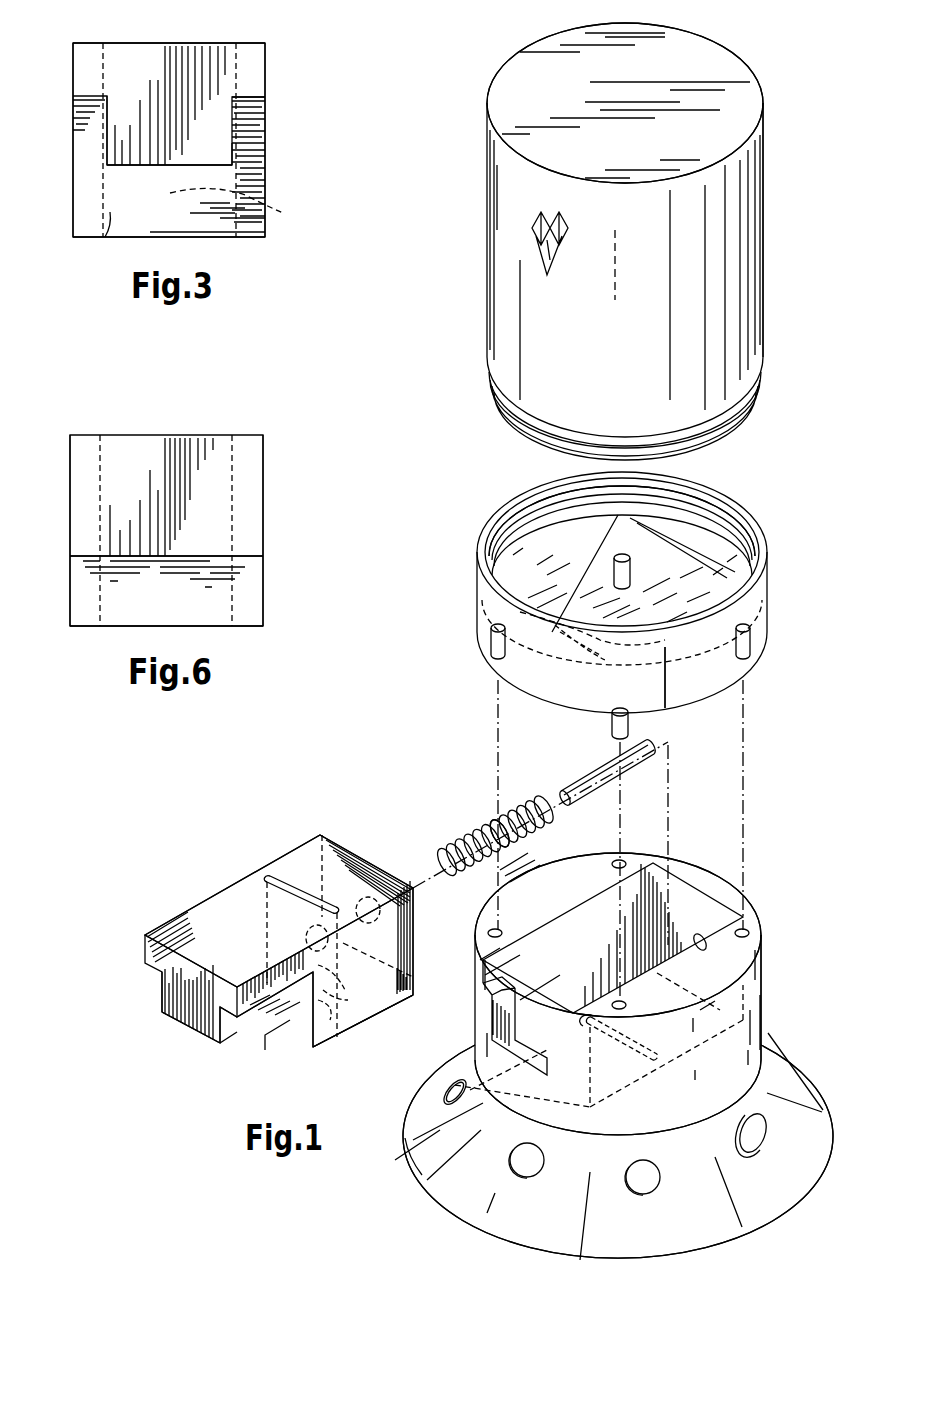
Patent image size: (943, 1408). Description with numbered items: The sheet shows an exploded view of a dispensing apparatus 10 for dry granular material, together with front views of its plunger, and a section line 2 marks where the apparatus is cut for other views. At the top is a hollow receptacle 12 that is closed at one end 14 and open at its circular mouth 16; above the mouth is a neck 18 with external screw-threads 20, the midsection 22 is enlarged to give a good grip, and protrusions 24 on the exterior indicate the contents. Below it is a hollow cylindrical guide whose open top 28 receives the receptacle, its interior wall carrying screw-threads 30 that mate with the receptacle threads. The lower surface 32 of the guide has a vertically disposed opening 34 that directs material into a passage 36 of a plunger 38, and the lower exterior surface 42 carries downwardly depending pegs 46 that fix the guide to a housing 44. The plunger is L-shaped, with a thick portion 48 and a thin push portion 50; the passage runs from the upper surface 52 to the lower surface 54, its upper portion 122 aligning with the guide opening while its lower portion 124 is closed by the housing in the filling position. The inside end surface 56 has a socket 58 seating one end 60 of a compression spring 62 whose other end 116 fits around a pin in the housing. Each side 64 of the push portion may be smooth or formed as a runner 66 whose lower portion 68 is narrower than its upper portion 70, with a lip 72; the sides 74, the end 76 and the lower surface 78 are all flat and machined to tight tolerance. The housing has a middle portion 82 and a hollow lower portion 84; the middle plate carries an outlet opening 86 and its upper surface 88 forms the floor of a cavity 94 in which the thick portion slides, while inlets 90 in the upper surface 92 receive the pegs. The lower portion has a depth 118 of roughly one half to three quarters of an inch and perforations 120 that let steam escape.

In FIG. 1, the section line 2 is at (378, 648).
In FIG. 1, the dispensing apparatus 10 is at (428, 606).
In FIG. 1, the hollow receptacle 12 is at (640, 364).
In FIG. 1, the closed end 14 is at (585, 95).
In FIG. 1, the open end or mouth 16 is at (560, 444).
In FIG. 1, the neck 18 is at (730, 440).
In FIG. 1, the screw-threads 20 is at (497, 408).
In FIG. 1, the midsection 22 is at (720, 235).
In FIG. 1, the protrusions 24 is at (532, 225).
In FIG. 1, the open top of guide 28 is at (662, 516).
In FIG. 1, the screw-threads 30 is at (513, 515).
In FIG. 1, the lower surface of guide 32 is at (540, 676).
In FIG. 1, the opening 34 is at (665, 681).
In FIG. 3, the passage 36 is at (210, 210).
In FIG. 1, the passage 36 is at (328, 962).
In FIG. 3, the plunger 38 is at (190, 213).
In FIG. 1, the plunger 38 is at (390, 962).
In FIG. 1, the lower exterior surface of guide 42 is at (755, 665).
In FIG. 1, the housing 44 is at (668, 1117).
In FIG. 1, the pegs 46 is at (612, 722).
In FIG. 3, the thick portion 48 is at (107, 215).
In FIG. 1, the thick portion 48 is at (290, 1025).
In FIG. 3, the push portion 50 is at (98, 65).
In FIG. 1, the push portion 50 is at (185, 942).
In FIG. 3, the upper surface of plunger 52 is at (115, 43).
In FIG. 6, the upper surface of plunger 52 is at (145, 435).
In FIG. 1, the upper surface of plunger 52 is at (248, 885).
In FIG. 3, the lower surface of plunger 54 is at (215, 238).
In FIG. 6, the lower surface of plunger 54 is at (210, 626).
In FIG. 1, the lower surface of plunger 54 is at (345, 1030).
In FIG. 1, the inside end surface 56 is at (413, 912).
In FIG. 1, the socket 58 is at (368, 844).
In FIG. 1, the spring end 60 is at (447, 860).
In FIG. 1, the compression spring 62 is at (497, 830).
In FIG. 3, the side of push portion 64 is at (268, 143).
In FIG. 6, the side of push portion 64 is at (263, 468).
In FIG. 1, the side of push portion 64 is at (220, 1038).
In FIG. 1, the runner 66 is at (260, 975).
In FIG. 3, the lower portion of runner 68 is at (107, 140).
In FIG. 1, the lower portion of runner 68 is at (228, 1030).
In FIG. 3, the upper portion of runner 70 is at (268, 47).
In FIG. 1, the upper portion of runner 70 is at (262, 952).
In FIG. 3, the lip 72 is at (250, 97).
In FIG. 3, the sides of plunger 74 is at (73, 212).
In FIG. 6, the sides of plunger 74 is at (70, 598).
In FIG. 1, the sides of plunger 74 is at (300, 1043).
In FIG. 3, the end of plunger 76 is at (175, 135).
In FIG. 6, the end of plunger 76 is at (215, 510).
In FIG. 1, the end of plunger 76 is at (185, 994).
In FIG. 3, the lower surface of push portion 78 is at (155, 165).
In FIG. 6, the lower surface of push portion 78 is at (215, 560).
In FIG. 1, the lower surface of push portion 78 is at (232, 1040).
In FIG. 1, the middle portion 82 is at (775, 1040).
In FIG. 1, the lower portion 84 is at (793, 1162).
In FIG. 1, the opening 86 is at (440, 1110).
In FIG. 1, the upper surface of middle portion 88 is at (760, 1082).
In FIG. 1, the inlets 90 is at (748, 932).
In FIG. 1, the upper surface of housing 92 is at (545, 890).
In FIG. 1, the cavity or guide way 94 is at (688, 905).
In FIG. 1, the spring end 116 is at (557, 808).
In FIG. 1, the depth of lower portion 118 is at (505, 1158).
In FIG. 1, the perforation 120 is at (505, 1165).
In FIG. 1, the upper portion of passage 122 is at (300, 897).
In FIG. 1, the lower portion of passage 124 is at (328, 1010).